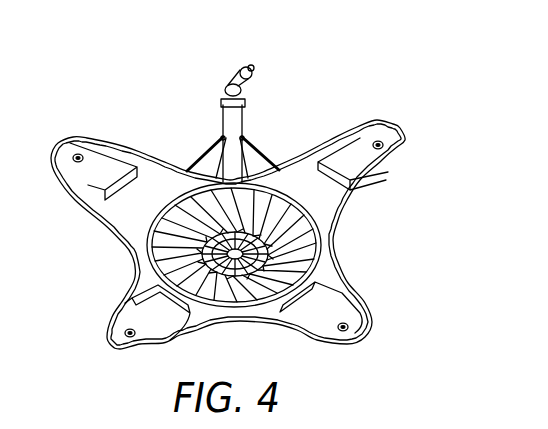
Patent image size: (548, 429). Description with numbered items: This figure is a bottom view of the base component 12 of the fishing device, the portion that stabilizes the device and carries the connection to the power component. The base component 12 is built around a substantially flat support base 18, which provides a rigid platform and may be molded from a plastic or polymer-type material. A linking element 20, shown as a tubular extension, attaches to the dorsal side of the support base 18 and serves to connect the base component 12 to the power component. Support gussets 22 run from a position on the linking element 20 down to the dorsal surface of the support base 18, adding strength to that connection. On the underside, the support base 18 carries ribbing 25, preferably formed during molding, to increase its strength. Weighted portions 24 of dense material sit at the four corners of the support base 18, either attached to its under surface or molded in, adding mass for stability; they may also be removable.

The base component 12 is at (84, 115).
The support base 18 is at (140, 245).
The linking element 20 is at (228, 122).
The support gussets 22 is at (205, 150).
The weighted portions 24 is at (367, 163).
The ribbing 25 is at (245, 295).